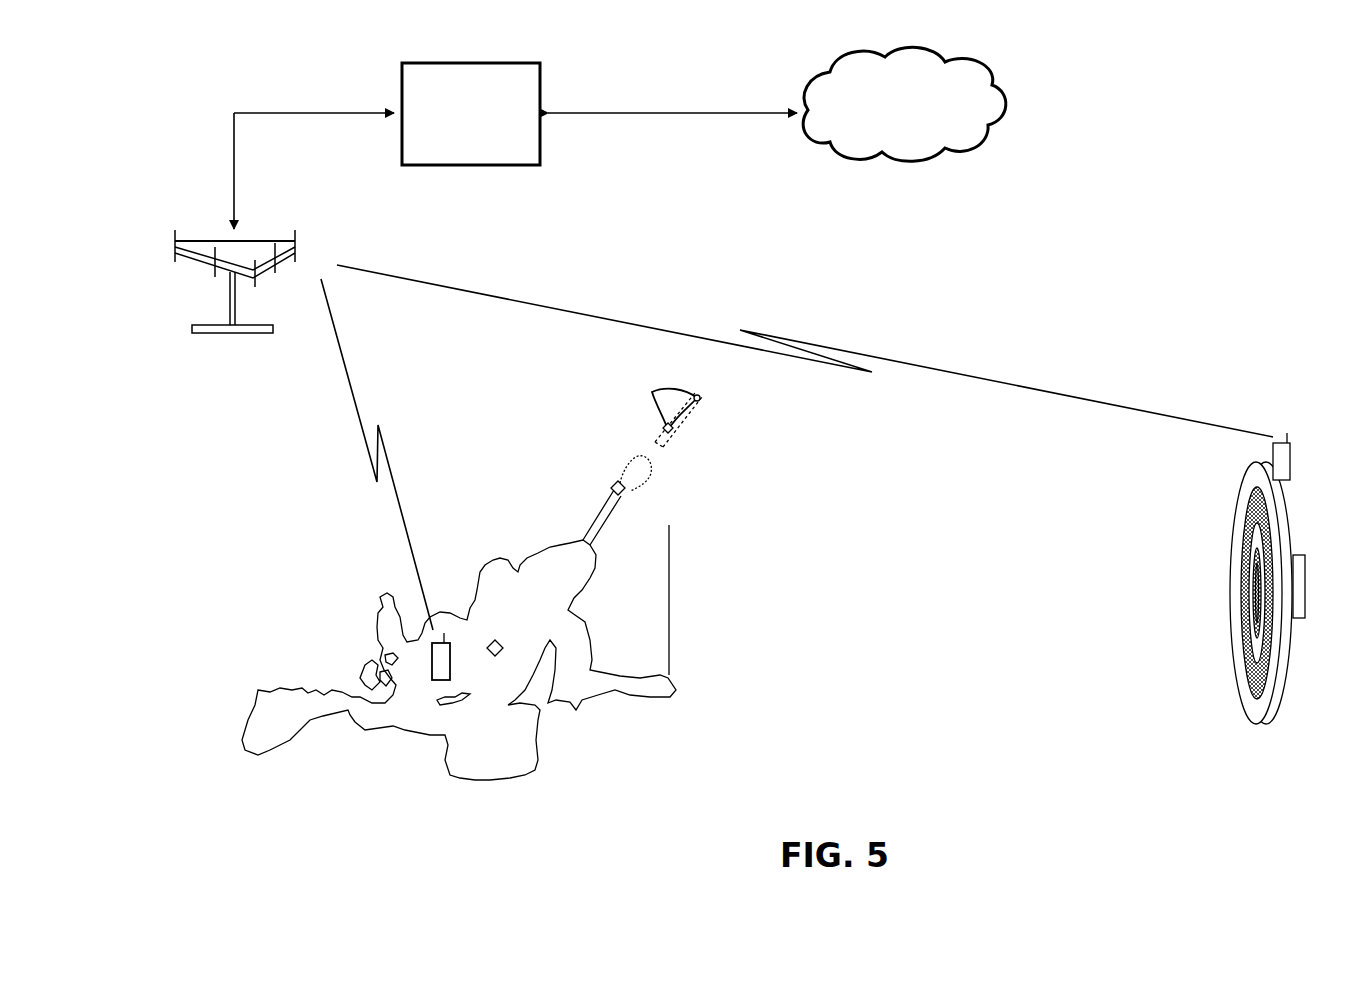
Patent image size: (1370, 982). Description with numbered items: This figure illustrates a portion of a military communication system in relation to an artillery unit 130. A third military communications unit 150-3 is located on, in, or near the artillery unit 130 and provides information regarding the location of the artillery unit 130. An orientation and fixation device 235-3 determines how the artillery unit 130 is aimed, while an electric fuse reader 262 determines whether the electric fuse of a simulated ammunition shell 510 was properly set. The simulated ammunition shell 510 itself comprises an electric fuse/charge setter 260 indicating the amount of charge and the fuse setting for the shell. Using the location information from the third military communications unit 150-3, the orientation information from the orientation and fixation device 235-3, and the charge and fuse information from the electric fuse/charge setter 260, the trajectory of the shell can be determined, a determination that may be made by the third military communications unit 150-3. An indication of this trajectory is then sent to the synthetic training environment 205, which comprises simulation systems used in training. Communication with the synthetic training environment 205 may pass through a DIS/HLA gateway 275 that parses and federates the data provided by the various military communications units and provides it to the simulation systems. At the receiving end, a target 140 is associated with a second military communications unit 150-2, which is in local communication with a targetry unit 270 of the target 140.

The DIS/HLA gateway 275 is at (542, 82).
The synthetic training environment 205 is at (1006, 78).
The second military communications unit 150-2 is at (1291, 445).
The targetry unit 270 is at (1305, 555).
The target 140 is at (1248, 722).
The artillery unit 130 is at (460, 750).
The third military communications unit 150-3 is at (437, 660).
The electric fuse reader 262 is at (503, 648).
The orientation and fixation device 235-3 is at (625, 490).
The electric fuse/charge setter 260 is at (659, 410).
The simulated ammunition shell 510 is at (700, 400).